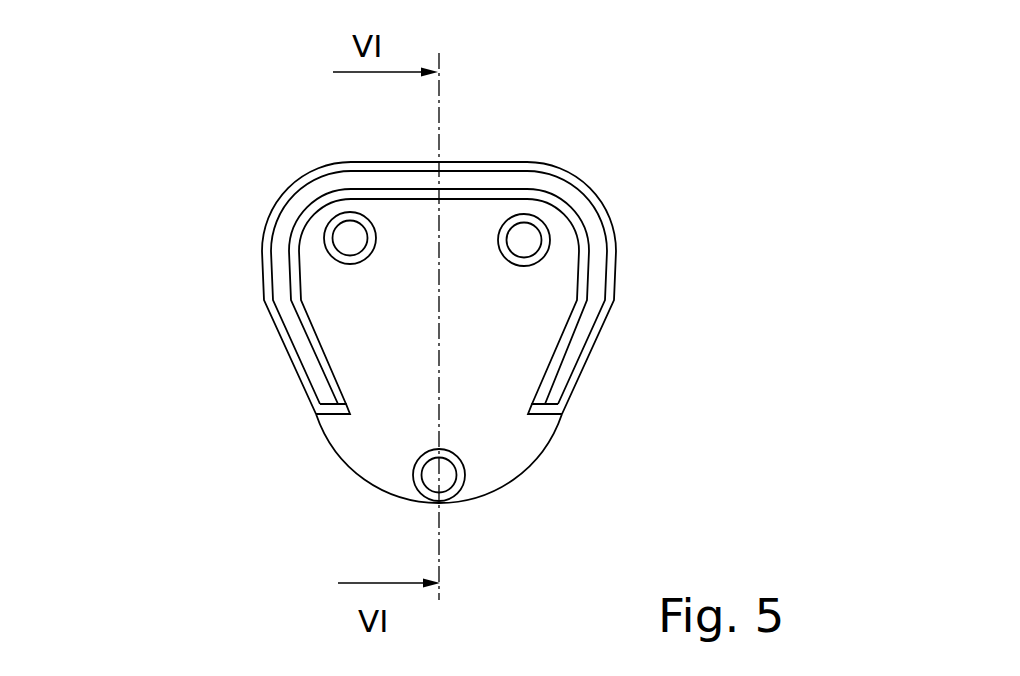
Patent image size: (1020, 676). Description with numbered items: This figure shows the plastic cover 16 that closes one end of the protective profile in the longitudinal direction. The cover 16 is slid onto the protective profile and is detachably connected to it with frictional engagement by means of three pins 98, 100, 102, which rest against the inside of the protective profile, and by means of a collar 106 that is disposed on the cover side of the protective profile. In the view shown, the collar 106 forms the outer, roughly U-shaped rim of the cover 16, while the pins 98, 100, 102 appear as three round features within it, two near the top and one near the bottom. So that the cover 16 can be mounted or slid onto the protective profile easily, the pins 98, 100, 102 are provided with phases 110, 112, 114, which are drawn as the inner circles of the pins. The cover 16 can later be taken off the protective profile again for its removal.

The cover 16 is at (436, 289).
The pin 98 is at (348, 237).
The pin 100 is at (534, 241).
The pin 102 is at (433, 468).
The collar 106 is at (518, 177).
The phase 110 is at (342, 265).
The phase 112 is at (540, 247).
The phase 114 is at (420, 487).